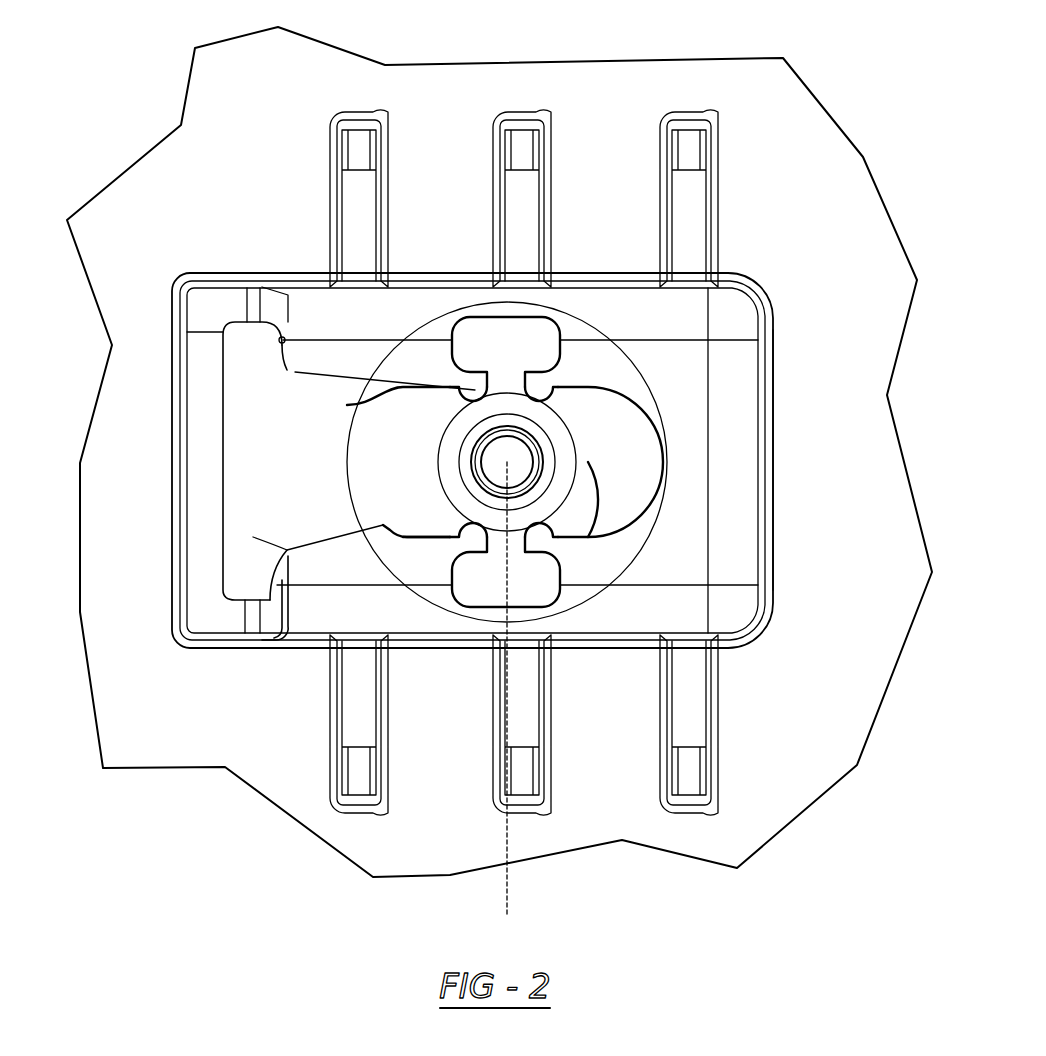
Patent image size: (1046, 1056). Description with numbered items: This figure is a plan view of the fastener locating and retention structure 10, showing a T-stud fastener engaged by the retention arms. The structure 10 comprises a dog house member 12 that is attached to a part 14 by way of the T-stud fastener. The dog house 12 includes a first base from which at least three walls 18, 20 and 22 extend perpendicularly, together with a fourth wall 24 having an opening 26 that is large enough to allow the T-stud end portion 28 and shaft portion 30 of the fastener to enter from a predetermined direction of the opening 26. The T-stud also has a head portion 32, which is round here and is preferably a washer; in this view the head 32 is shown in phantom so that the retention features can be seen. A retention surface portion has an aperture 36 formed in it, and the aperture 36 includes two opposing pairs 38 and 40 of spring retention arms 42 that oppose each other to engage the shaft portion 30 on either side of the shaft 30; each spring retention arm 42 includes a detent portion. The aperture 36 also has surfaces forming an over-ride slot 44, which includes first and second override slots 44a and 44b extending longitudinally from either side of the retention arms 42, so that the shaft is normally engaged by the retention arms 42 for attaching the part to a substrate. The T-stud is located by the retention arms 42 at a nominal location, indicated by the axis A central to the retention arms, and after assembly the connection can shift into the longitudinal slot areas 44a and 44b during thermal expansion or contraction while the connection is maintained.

The fastener locating and retention structure 10 is at (148, 245).
The dog house member 12 is at (700, 400).
The part 14 is at (697, 183).
The wall 18 is at (583, 283).
The wall 20 is at (738, 419).
The wall 22 is at (358, 625).
The fourth wall 24 is at (273, 607).
The opening 26 is at (232, 540).
The T-stud end portion 28 is at (405, 481).
The shaft portion 30 is at (568, 425).
The head portion 32 is at (565, 613).
The aperture 36 is at (347, 405).
The opposing pair of spring retention arms 38 is at (433, 520).
The opposing pair of spring retention arms 40 is at (437, 405).
The spring retention arm 42 is at (462, 388).
The over-ride slot 44 is at (663, 462).
The first override slot 44a is at (643, 512).
The second override slot 44b is at (403, 540).
The axis A is at (507, 847).